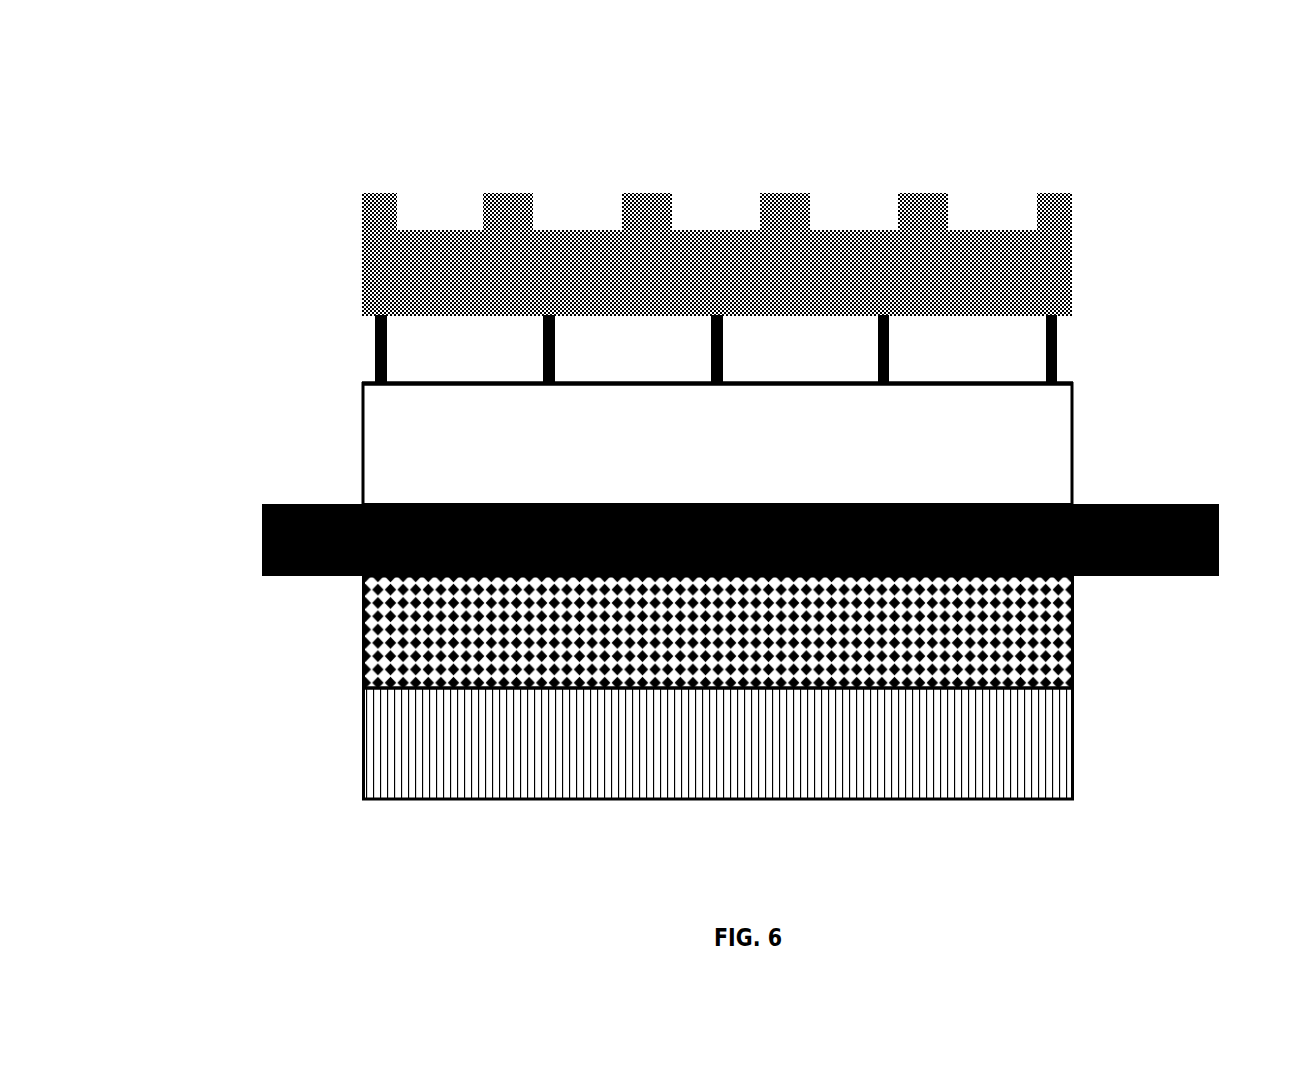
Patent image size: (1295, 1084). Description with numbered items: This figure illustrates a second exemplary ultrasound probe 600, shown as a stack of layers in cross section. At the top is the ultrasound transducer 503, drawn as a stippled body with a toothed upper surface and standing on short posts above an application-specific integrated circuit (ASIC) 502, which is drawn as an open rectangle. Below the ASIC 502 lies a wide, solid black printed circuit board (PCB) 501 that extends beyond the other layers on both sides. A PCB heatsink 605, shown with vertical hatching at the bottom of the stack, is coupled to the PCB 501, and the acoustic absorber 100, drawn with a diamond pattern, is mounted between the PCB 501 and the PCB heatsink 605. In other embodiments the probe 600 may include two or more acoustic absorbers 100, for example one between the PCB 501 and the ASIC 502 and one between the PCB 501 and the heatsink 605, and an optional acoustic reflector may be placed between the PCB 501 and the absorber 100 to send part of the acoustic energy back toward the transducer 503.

The ultrasound probe 600 is at (1163, 147).
The ultrasound transducer 503 is at (383, 243).
The application-specific integrated circuit (ASIC) 502 is at (370, 479).
The printed circuit board (PCB) 501 is at (262, 553).
The acoustic absorber 100 is at (363, 648).
The PCB heatsink 605 is at (363, 762).